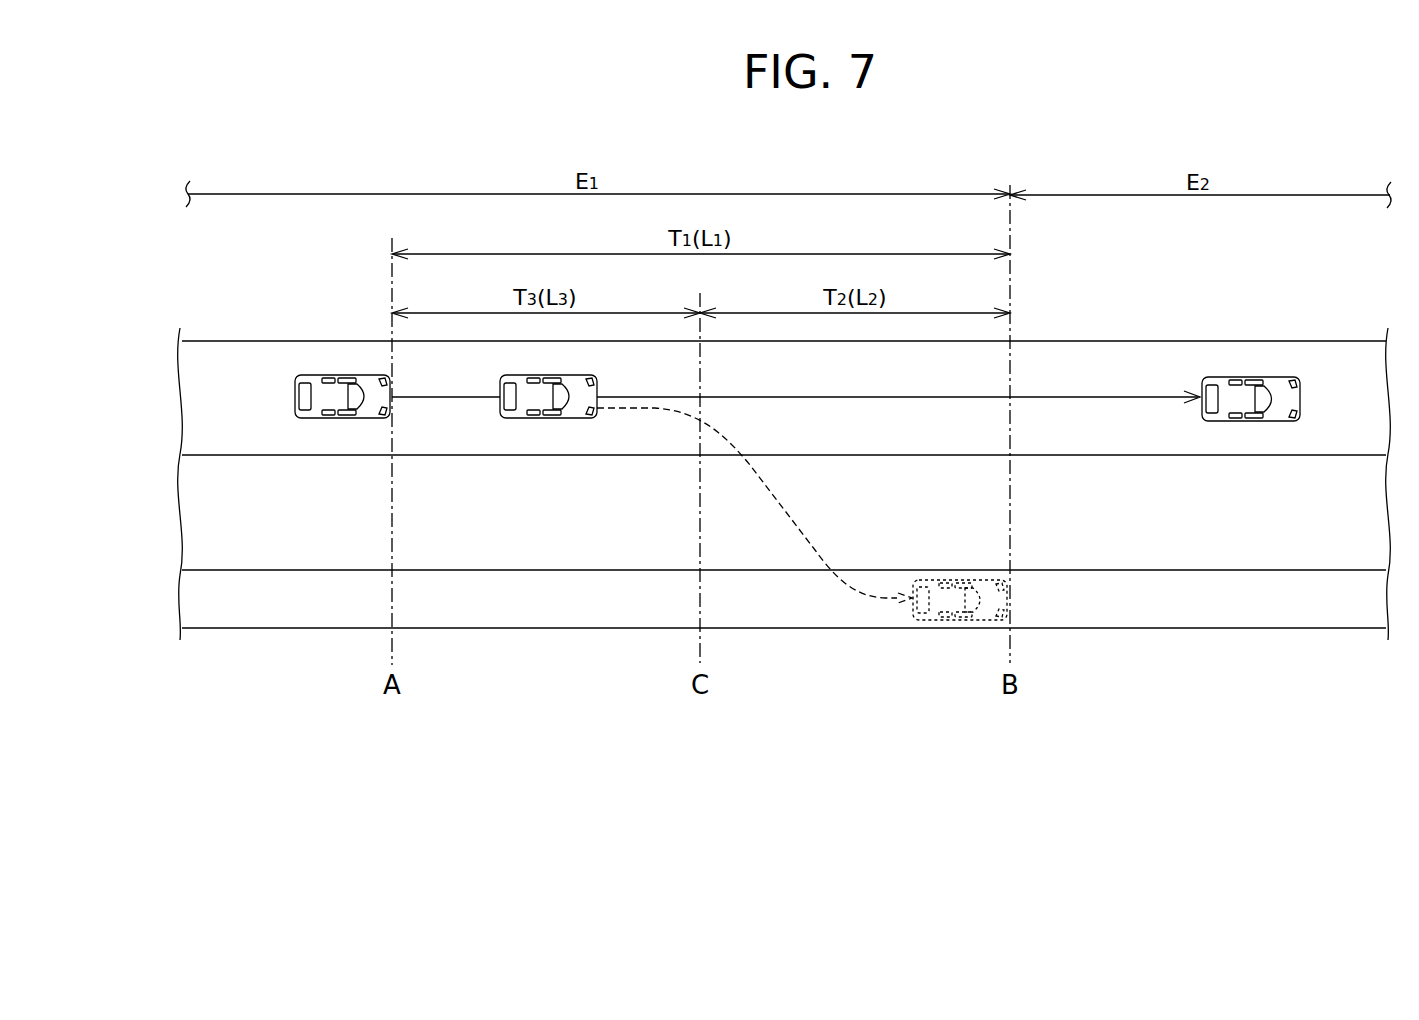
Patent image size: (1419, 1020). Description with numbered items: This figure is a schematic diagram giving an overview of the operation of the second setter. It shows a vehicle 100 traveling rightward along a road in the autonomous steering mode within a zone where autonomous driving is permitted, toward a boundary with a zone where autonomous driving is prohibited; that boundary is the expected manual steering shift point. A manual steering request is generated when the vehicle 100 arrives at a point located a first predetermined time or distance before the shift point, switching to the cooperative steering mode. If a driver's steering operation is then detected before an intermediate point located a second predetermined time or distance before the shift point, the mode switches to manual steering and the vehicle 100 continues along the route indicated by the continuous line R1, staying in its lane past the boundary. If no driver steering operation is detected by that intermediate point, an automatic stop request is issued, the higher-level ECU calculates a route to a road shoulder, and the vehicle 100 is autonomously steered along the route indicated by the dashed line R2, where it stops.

The vehicle 100 is at (317, 374).
The route indicated by a continuous line R1 is at (898, 397).
The route indicated by a dashed line R2 is at (800, 527).